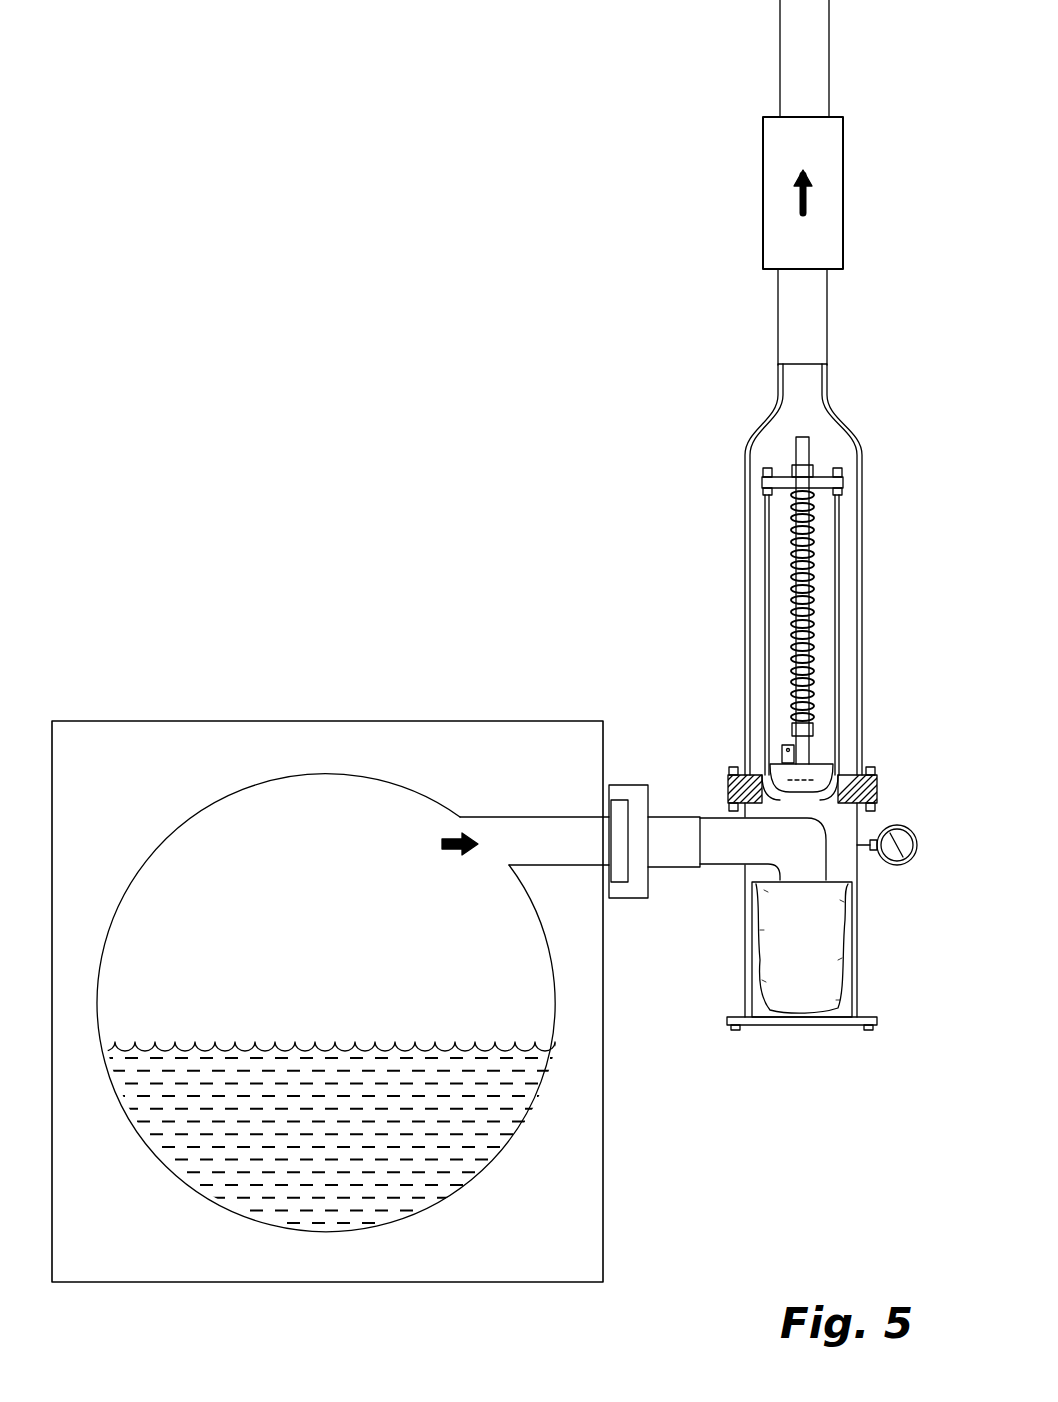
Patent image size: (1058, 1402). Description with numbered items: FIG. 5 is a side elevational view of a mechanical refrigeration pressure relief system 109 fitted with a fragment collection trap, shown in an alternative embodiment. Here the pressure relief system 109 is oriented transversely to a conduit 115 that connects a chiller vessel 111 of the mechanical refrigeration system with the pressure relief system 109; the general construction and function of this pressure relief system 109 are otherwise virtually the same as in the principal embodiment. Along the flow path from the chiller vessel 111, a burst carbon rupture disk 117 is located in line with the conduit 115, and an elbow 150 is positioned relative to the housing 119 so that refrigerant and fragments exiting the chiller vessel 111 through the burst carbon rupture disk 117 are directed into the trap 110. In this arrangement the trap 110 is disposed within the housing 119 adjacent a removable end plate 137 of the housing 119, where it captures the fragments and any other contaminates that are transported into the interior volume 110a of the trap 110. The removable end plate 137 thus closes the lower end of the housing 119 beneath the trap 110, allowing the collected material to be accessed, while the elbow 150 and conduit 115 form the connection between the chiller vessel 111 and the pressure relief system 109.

The pressure relief system 109 is at (735, 419).
The trap 110 is at (828, 975).
The interior volume 110a is at (822, 947).
The chiller vessel 111 is at (523, 942).
The conduit 115 is at (668, 814).
The burst carbon rupture disk 117 is at (617, 800).
The housing 119 is at (893, 760).
The removable end plate 137 is at (752, 1025).
The elbow 150 is at (717, 814).